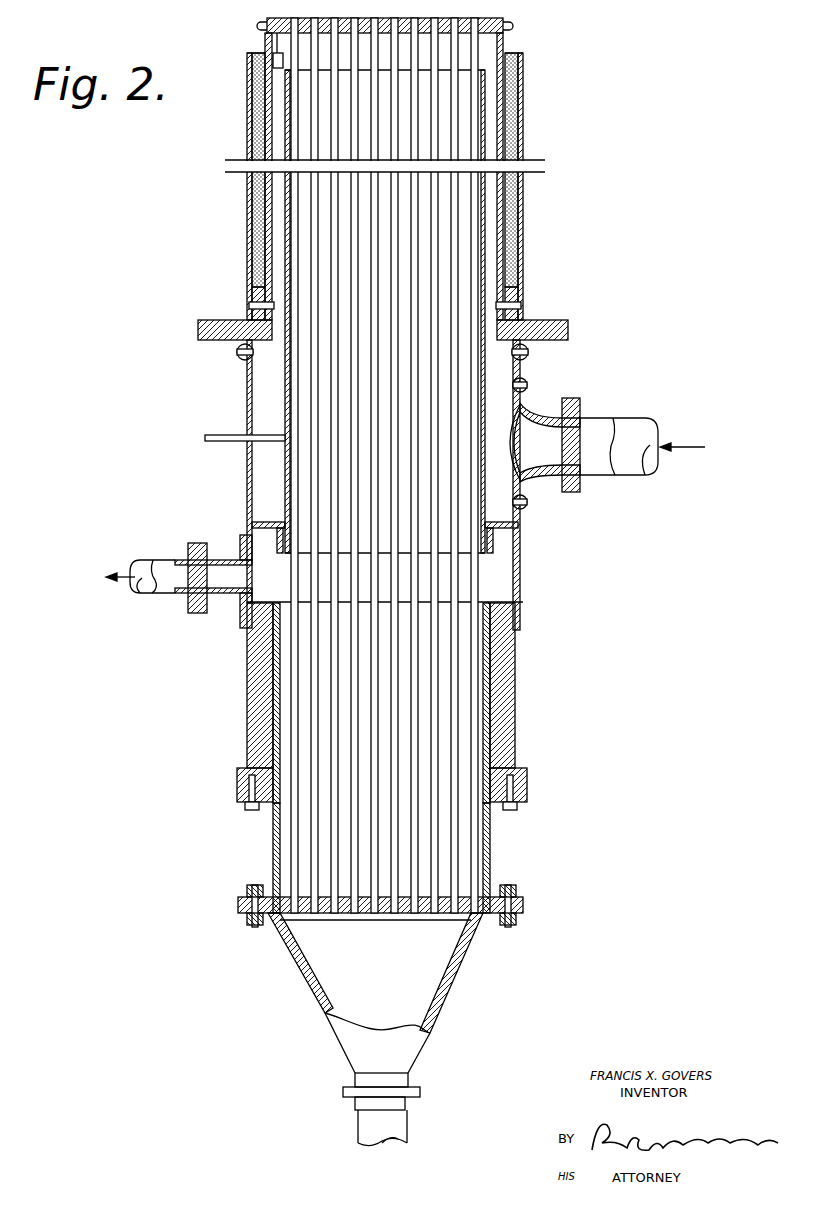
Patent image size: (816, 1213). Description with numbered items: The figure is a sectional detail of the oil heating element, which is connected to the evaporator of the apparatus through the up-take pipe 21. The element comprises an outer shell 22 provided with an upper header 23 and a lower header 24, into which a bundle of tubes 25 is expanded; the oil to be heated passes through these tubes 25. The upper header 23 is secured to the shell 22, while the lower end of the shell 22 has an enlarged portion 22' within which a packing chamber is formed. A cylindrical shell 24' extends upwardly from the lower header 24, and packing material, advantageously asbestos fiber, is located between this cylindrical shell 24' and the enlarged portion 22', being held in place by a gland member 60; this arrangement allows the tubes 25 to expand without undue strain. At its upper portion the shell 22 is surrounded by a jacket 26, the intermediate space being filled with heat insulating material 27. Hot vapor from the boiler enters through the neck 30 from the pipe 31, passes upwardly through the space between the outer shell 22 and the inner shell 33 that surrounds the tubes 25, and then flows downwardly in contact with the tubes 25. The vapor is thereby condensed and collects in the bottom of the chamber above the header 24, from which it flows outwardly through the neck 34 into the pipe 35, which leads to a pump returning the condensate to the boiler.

The up-take pipe 21 is at (370, 1120).
The outer shell 22 is at (381, 331).
The enlarged portion 22' is at (415, 706).
The upper header 23 is at (492, 36).
The header 24 is at (380, 925).
The cylindrical shell 24' is at (433, 858).
The tubes 25 is at (450, 862).
The jacket 26 is at (520, 207).
The heat insulating material 27 is at (512, 243).
The neck 30 is at (535, 412).
The pipe 31 is at (632, 428).
The shell 33 is at (485, 118).
The neck 34 is at (208, 560).
The pipe 35 is at (160, 578).
The gland member 60 is at (516, 800).